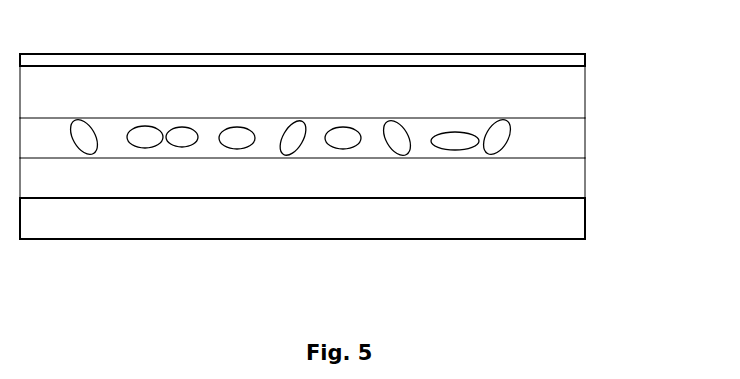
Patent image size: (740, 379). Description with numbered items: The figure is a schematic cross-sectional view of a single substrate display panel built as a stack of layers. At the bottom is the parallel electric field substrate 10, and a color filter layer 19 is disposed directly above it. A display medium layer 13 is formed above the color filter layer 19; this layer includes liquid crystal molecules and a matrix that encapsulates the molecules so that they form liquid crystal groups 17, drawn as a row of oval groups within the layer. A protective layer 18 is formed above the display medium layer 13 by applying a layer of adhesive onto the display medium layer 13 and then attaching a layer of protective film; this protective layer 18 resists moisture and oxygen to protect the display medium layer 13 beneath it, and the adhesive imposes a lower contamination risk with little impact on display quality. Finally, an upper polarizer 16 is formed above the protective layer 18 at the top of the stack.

The parallel electric field substrate 10 is at (586, 228).
The display medium layer 13 is at (586, 146).
The upper polarizer 16 is at (586, 54).
The liquid crystal groups 17 is at (513, 133).
The protective layer 18 is at (586, 88).
The color filter layer 19 is at (586, 180).